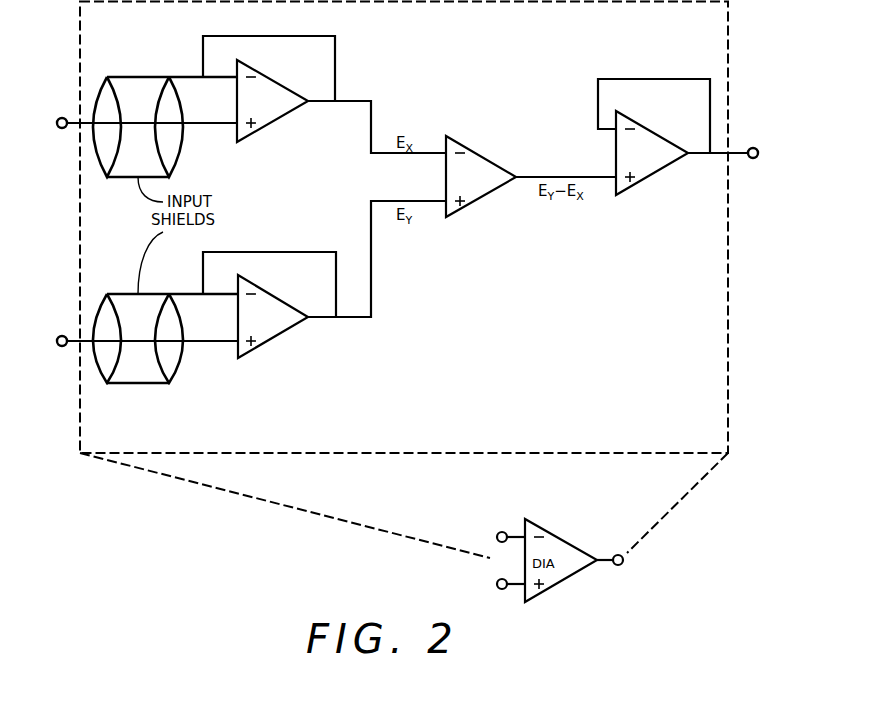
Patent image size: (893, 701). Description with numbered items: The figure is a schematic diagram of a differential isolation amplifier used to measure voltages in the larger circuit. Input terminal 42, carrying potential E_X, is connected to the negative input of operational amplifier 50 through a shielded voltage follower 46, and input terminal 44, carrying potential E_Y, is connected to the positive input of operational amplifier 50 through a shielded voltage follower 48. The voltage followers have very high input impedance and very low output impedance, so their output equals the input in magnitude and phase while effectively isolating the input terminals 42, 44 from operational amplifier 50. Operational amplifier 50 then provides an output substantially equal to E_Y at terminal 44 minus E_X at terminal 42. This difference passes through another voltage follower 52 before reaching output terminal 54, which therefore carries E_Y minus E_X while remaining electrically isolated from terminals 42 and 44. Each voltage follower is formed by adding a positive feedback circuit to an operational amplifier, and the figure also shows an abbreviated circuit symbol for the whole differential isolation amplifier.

The input terminal 42 is at (129, 113).
The input terminal 44 is at (130, 331).
The shielded voltage follower 46 is at (324, 94).
The shielded voltage follower 48 is at (324, 279).
The operational amplifier 50 is at (531, 171).
The voltage follower 52 is at (673, 137).
The output terminal 54 is at (782, 148).